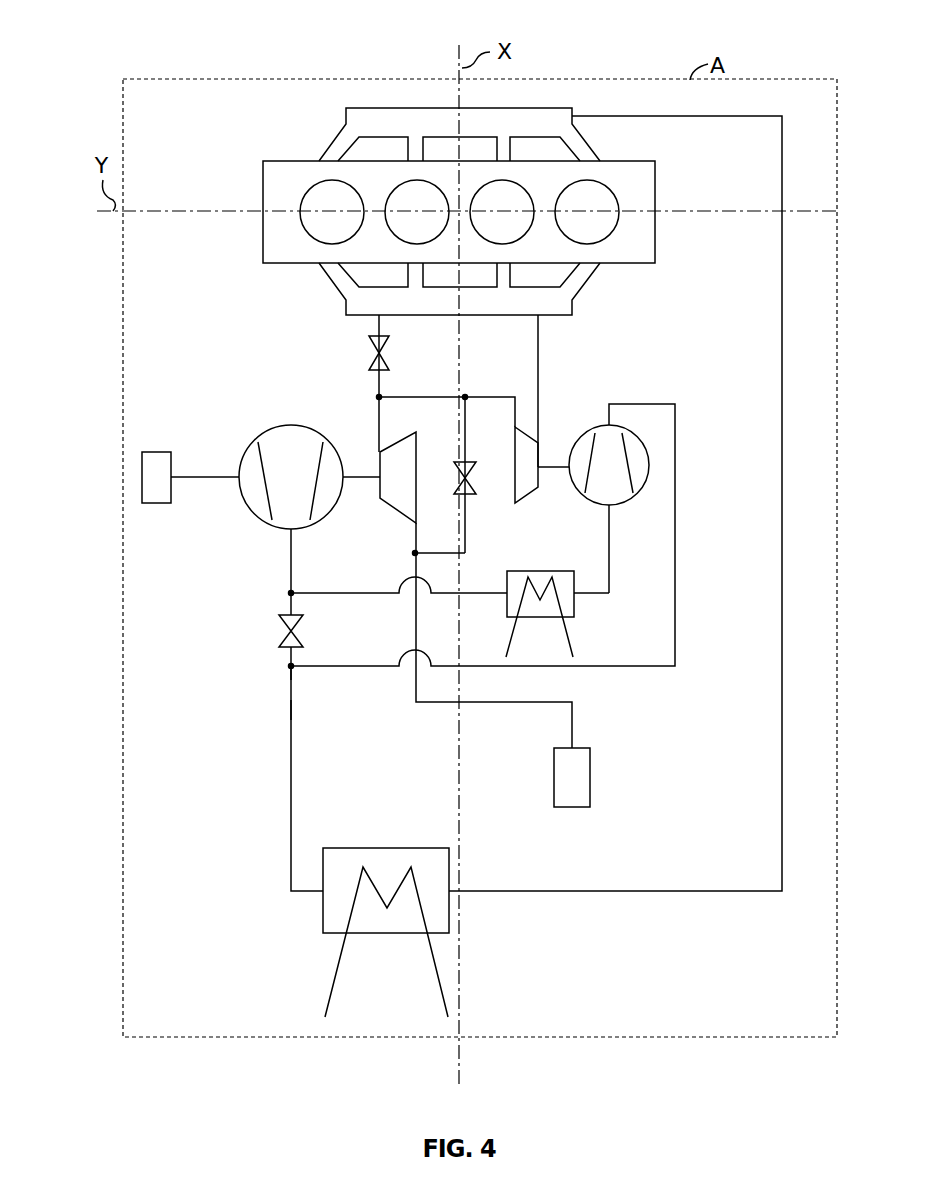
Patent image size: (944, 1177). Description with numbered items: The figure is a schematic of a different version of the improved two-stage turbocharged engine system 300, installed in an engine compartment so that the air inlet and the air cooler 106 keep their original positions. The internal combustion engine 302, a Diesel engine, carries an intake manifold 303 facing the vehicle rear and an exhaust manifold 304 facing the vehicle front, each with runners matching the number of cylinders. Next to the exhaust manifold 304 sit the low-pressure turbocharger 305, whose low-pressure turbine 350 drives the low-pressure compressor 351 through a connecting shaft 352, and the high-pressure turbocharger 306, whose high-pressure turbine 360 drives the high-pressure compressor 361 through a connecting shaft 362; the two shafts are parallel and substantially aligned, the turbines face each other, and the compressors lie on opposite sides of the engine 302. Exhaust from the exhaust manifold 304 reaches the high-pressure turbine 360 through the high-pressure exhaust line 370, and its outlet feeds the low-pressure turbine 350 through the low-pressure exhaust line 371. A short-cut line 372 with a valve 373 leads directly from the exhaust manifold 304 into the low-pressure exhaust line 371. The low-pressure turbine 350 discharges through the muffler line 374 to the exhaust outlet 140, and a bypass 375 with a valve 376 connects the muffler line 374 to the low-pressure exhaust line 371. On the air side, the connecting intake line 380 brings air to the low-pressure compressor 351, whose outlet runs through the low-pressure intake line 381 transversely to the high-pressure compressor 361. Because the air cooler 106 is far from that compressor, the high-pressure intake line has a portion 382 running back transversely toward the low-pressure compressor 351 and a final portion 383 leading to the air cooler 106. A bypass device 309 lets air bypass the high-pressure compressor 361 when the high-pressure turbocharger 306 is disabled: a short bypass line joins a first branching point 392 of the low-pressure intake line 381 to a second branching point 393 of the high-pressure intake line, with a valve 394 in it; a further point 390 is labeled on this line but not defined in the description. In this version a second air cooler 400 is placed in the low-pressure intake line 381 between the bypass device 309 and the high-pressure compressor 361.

The two-stage turbocharged engine system 300 is at (167, 40).
The internal combustion engine 302 is at (645, 245).
The intake manifold 303 is at (352, 117).
The exhaust manifold 304 is at (573, 310).
The low-pressure turbocharger 305 is at (299, 462).
The high-pressure turbocharger 306 is at (587, 466).
The bypass device 309 is at (232, 631).
The low-pressure turbine 350 is at (397, 497).
The low-pressure compressor 351 is at (258, 503).
The connecting shaft 352 is at (368, 475).
The high-pressure turbine 360 is at (520, 495).
The high-pressure compressor 361 is at (610, 493).
The connecting shaft 362 is at (547, 470).
The high-pressure exhaust line 370 is at (542, 360).
The low-pressure exhaust line 371 is at (414, 395).
The short-cut line 372 is at (376, 382).
The valve 373 is at (372, 346).
The muffler line 374 is at (520, 705).
The bypass 375 is at (440, 556).
The valve 376 is at (470, 497).
The connecting intake line 380 is at (190, 477).
The low-pressure intake line 381 is at (360, 595).
The portion of high-pressure intake line 382 is at (630, 668).
The final portion of high-pressure intake line 383 is at (288, 772).
The second junction 390 is at (288, 653).
The first branching point 392 is at (288, 592).
The second branching point 393 is at (288, 680).
The valve 394 is at (283, 626).
The second air cooler 400 is at (567, 602).
The exhaust outlet 140 is at (578, 771).
The air cooler 106 is at (322, 920).